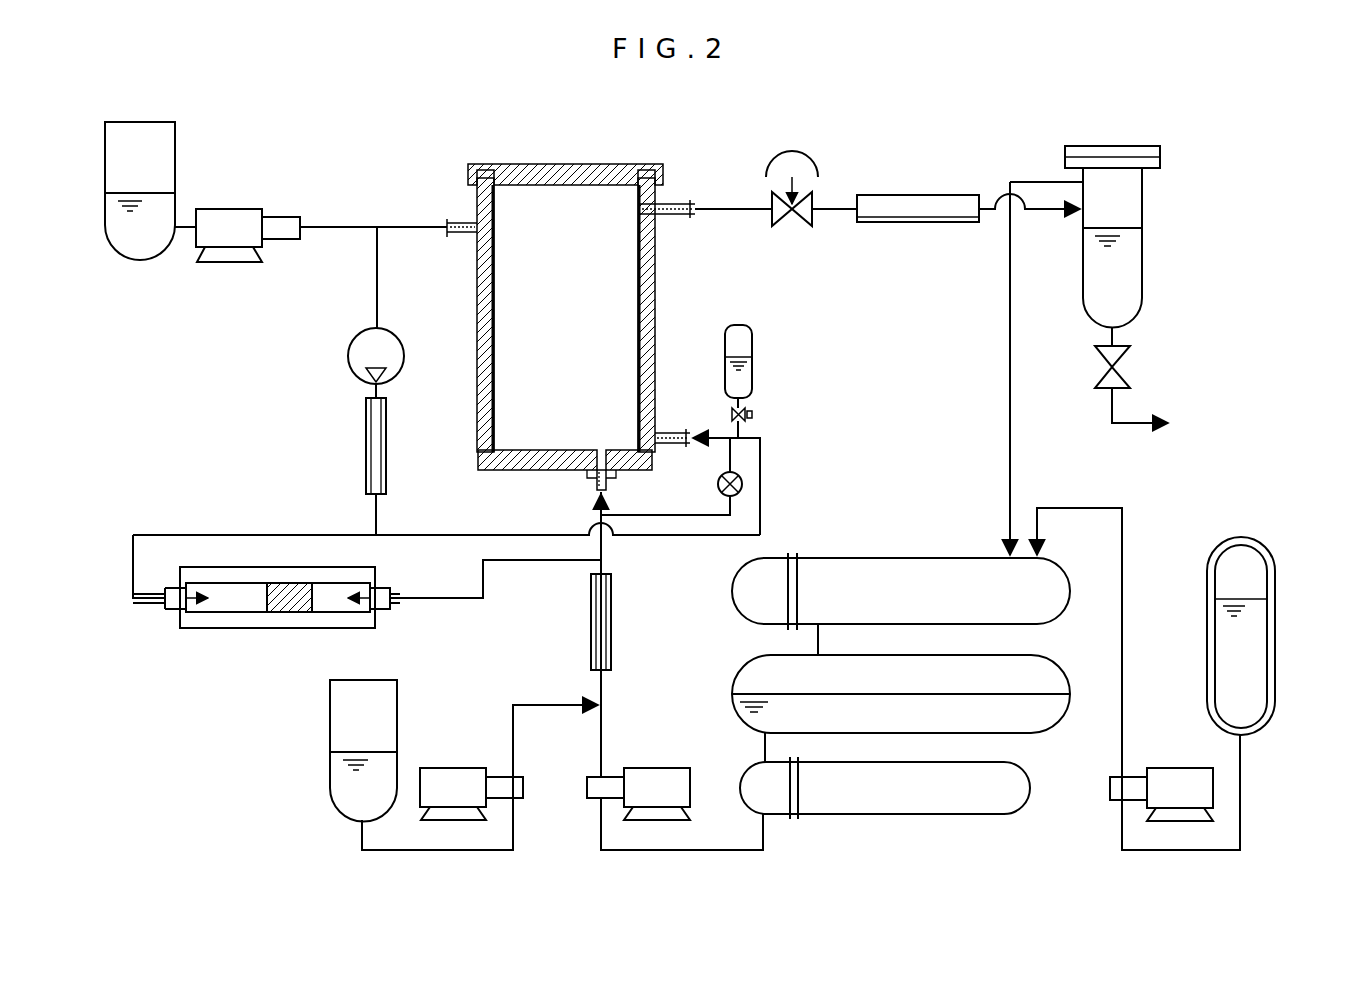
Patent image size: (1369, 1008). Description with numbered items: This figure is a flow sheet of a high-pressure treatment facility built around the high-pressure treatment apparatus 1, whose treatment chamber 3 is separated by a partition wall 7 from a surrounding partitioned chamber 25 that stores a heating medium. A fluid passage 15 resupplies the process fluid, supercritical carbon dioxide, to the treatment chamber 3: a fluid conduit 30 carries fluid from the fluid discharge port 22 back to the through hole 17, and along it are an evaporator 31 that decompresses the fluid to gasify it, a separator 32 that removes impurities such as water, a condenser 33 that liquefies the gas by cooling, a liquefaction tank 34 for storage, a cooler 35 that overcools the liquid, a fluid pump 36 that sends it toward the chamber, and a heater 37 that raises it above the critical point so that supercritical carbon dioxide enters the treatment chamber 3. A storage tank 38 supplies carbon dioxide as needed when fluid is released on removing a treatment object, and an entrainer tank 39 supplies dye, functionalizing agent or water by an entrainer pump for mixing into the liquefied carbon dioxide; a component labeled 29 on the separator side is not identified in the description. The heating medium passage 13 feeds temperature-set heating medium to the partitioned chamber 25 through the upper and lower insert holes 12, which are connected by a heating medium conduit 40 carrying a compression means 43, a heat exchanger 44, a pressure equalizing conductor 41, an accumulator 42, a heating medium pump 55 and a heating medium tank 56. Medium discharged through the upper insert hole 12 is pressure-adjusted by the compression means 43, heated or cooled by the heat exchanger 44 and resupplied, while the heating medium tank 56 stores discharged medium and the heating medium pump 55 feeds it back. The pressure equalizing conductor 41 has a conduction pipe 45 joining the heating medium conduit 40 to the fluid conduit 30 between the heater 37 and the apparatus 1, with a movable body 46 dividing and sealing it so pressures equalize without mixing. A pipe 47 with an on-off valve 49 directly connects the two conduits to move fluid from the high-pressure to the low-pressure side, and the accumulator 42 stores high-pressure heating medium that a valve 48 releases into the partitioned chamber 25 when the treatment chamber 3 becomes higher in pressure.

The high-pressure treatment apparatus 1 is at (645, 152).
The treatment chamber 3 is at (574, 348).
The partition wall 7 is at (494, 272).
The insert hole 12 is at (462, 226).
The heating medium passage 13 is at (687, 543).
The fluid passage 15 is at (608, 548).
The through hole 17 is at (597, 488).
The fluid discharge port 22 is at (658, 218).
The partitioned chamber 25 is at (478, 400).
The discharge section 29 is at (1140, 122).
The fluid conduit 30 is at (740, 212).
The evaporator 31 is at (908, 195).
The separator 32 is at (1142, 218).
The condenser 33 is at (925, 572).
The liquefaction tank 34 is at (1045, 722).
The cooler 35 is at (940, 810).
The fluid pump 36 is at (665, 770).
The heater 37 is at (610, 640).
The storage tank 38 is at (1257, 645).
The entrainer tank 39 is at (345, 727).
The heating medium conduit 40 is at (762, 450).
The pressure equalizing conductor 41 is at (213, 625).
The accumulator 42 is at (752, 337).
The compression means 43 is at (360, 340).
The heat exchanger 44 is at (368, 450).
The conduction pipe 45 is at (345, 613).
The movable body 46 is at (290, 613).
The pipe 47 is at (742, 510).
The valve 48 is at (754, 412).
The on-off valve 49 is at (745, 484).
The heating medium pump 55 is at (240, 212).
The heating medium tank 56 is at (183, 148).